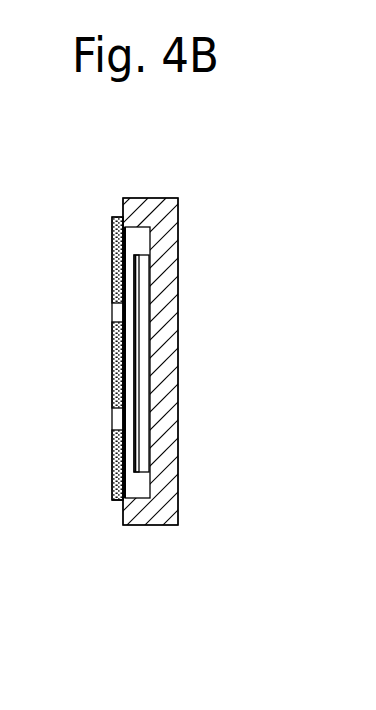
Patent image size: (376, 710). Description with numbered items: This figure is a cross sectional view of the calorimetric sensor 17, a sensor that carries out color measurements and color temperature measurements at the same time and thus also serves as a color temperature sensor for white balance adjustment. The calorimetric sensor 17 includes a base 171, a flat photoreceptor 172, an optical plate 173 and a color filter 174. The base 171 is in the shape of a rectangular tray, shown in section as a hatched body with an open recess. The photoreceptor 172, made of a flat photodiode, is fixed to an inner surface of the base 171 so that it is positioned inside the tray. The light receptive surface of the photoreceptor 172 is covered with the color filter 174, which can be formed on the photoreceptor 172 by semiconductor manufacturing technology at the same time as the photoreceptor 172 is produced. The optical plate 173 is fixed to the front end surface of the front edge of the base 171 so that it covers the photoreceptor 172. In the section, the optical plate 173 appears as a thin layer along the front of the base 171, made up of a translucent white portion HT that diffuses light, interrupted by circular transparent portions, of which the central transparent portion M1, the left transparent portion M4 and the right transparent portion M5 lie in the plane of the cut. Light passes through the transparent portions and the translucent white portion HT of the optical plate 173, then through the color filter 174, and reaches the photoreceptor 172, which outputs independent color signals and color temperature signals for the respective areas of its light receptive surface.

The calorimetric sensor 17 is at (148, 193).
The base 171 is at (170, 515).
The flat photoreceptor 172 is at (150, 403).
The optical plate 173 is at (120, 503).
The color filter 174 is at (140, 273).
The translucent white portion HT is at (112, 218).
The central transparent portion M1 is at (197, 363).
The left transparent portion M4 is at (113, 308).
The right transparent portion M5 is at (114, 420).